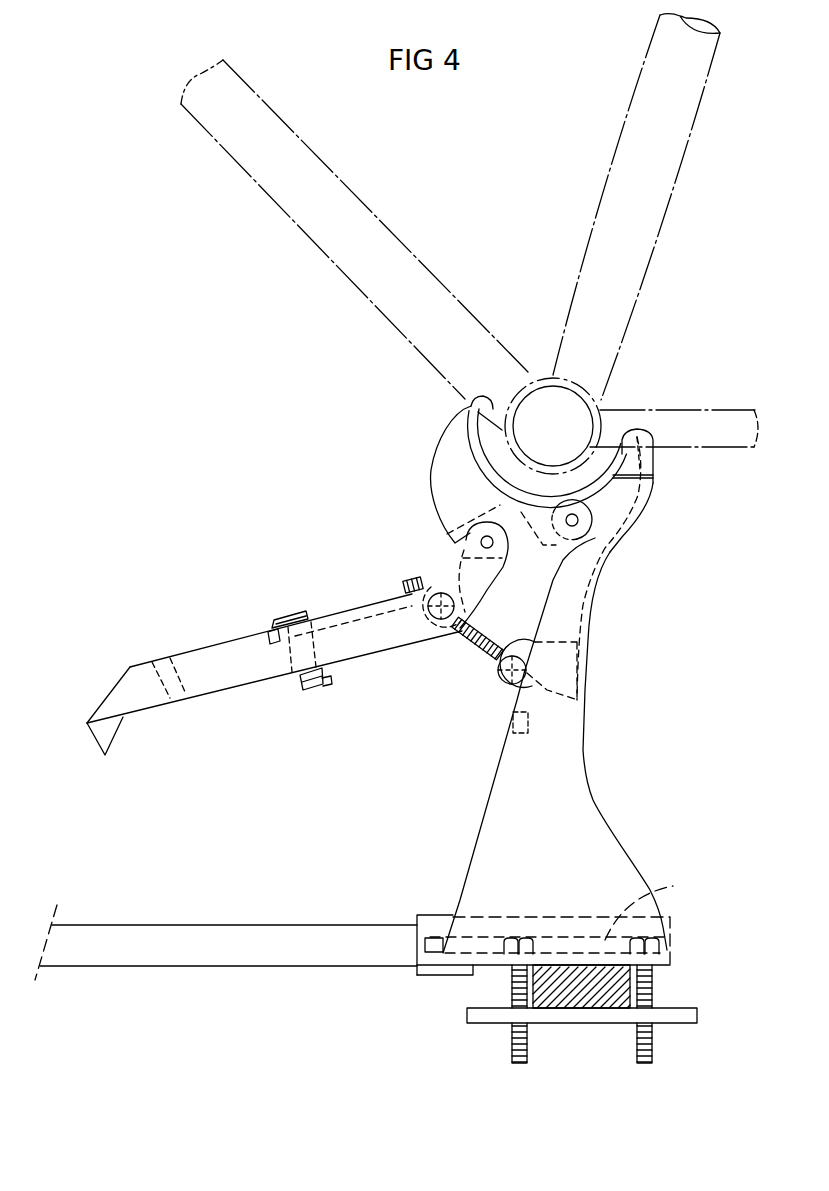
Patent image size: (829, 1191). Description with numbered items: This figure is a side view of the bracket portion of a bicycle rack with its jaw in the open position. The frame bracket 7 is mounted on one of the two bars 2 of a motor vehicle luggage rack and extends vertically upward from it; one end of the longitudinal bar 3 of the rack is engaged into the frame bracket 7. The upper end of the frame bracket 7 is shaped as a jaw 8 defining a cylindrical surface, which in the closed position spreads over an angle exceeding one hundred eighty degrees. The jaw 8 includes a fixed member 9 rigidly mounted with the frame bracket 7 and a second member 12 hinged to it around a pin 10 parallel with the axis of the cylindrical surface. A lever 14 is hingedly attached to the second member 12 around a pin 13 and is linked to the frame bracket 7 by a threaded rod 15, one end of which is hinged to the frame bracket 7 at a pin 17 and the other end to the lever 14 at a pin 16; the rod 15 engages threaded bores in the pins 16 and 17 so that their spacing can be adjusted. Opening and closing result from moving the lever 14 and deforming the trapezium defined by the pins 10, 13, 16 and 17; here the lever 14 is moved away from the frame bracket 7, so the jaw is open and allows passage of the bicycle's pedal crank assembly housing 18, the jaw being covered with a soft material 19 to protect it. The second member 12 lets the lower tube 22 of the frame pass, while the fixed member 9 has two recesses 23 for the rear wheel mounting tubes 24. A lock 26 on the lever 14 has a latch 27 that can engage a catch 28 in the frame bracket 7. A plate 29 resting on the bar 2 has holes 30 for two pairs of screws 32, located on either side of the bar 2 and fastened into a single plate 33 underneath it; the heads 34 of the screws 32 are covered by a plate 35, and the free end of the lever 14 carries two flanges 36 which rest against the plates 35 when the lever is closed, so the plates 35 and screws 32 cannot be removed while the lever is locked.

The bar 2 is at (613, 993).
The longitudinal bar 3 is at (163, 953).
The frame bracket 7 is at (627, 818).
The jaw 8 is at (557, 482).
The fixed member 9 is at (632, 487).
The pin 10 is at (578, 521).
The second member 12 is at (442, 493).
The pin 13 is at (490, 572).
The lever 14 is at (357, 617).
The rod 15 is at (480, 652).
The pin 16 is at (503, 693).
The pin 17 is at (443, 600).
The pedal crank assembly housing 18 is at (568, 380).
The soft material 19 is at (470, 448).
The lower tube 22 is at (295, 207).
The recesses 23 is at (632, 458).
The rear wheel mounting tubes 24 is at (710, 421).
The lock 26 is at (287, 615).
The latch 27 is at (328, 686).
The catch 28 is at (528, 728).
The plate 29 is at (433, 935).
The holes 30 is at (508, 975).
The screws 32 is at (660, 988).
The plate 33 is at (563, 1022).
The heads 34 is at (653, 947).
The plate 35 is at (659, 897).
The flanges 36 is at (110, 735).